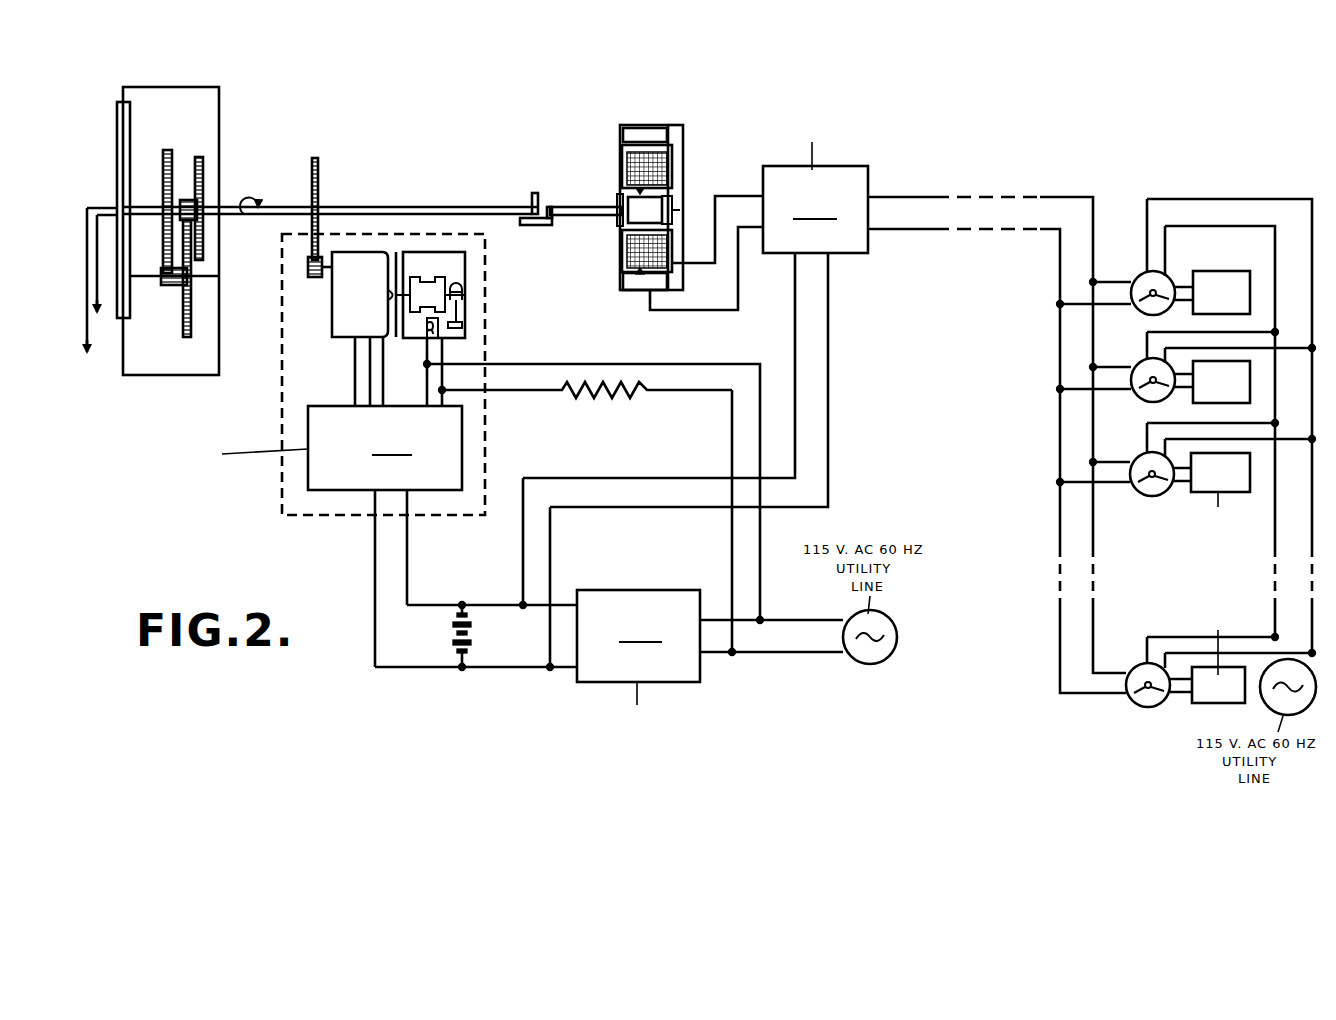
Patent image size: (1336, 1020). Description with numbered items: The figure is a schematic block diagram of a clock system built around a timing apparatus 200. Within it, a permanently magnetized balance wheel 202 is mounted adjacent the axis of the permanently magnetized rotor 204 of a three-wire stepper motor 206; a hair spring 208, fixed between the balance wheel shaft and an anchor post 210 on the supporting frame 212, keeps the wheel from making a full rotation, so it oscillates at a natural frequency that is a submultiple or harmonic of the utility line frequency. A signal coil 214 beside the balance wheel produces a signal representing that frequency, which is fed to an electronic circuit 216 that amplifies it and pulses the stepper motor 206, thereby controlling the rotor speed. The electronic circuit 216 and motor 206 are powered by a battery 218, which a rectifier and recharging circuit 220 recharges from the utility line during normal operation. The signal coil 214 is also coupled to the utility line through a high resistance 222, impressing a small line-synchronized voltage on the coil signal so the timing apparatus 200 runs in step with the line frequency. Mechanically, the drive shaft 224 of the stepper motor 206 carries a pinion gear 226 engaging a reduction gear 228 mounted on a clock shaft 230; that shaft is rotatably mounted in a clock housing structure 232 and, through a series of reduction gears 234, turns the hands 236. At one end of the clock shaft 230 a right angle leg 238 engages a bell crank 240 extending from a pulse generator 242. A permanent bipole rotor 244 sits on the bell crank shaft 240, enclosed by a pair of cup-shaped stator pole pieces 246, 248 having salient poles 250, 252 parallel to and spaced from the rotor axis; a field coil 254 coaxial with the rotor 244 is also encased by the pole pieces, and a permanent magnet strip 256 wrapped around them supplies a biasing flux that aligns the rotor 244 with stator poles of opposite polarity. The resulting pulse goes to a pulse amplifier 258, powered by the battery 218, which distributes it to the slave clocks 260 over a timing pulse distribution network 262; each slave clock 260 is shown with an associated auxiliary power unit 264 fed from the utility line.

The timing apparatus 200 is at (312, 517).
The balance wheel 202 is at (418, 282).
The rotor 204 is at (390, 295).
The three-wire stepper motor 206 is at (335, 340).
The hair spring 208 is at (465, 300).
The anchor post 210 is at (463, 325).
The frame 212 is at (458, 338).
The signal coil 214 is at (420, 340).
The electronic circuit 216 is at (277, 448).
The battery 218 is at (450, 626).
The rectifier and recharging circuit 220 is at (683, 669).
The high resistance 222 is at (608, 398).
The drive shaft 224 is at (323, 280).
The pinion gear 226 is at (308, 267).
The reduction gear 228 is at (311, 165).
The clock shaft 230 is at (422, 206).
The clock housing structure 232 is at (172, 86).
The reduction gears 234 is at (191, 318).
The hands 236 is at (87, 273).
The right angle leg 238 is at (531, 195).
The bell crank 240 is at (538, 225).
The pulse generator 242 is at (645, 126).
The permanent bipole rotor 244 is at (628, 216).
The cup-shaped stator pole piece 246 is at (620, 150).
The cup-shaped stator pole piece 248 is at (673, 150).
The salient pole 250 is at (633, 186).
The salient pole 252 is at (627, 237).
The field coil 254 is at (662, 175).
The permanent magnet strip 256 is at (623, 280).
The pulse amplifier 258 is at (759, 208).
The slave clocks 260 is at (1140, 310).
The timing pulse distribution network 262 is at (1048, 193).
The auxiliary power unit 264 is at (1207, 270).